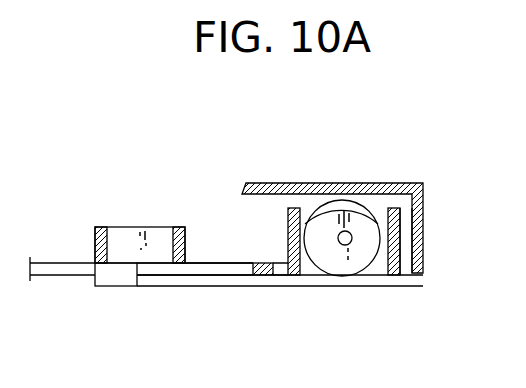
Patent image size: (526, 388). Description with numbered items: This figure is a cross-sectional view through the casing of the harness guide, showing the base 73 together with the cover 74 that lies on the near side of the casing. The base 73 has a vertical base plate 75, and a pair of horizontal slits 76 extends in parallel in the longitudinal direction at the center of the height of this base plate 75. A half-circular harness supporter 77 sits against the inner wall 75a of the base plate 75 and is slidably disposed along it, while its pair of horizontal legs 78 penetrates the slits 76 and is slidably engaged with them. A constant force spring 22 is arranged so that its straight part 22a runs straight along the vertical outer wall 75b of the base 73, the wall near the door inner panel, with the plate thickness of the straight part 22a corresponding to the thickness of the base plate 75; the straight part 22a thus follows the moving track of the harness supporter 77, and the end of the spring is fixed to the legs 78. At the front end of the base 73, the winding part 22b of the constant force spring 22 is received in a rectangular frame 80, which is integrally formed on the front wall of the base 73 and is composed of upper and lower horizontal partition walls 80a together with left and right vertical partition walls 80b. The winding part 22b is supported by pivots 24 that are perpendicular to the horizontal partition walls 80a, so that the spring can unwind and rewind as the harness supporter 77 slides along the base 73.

The constant force spring 22 is at (360, 196).
The straight part 22a is at (193, 287).
The winding part 22b is at (325, 253).
The pivot 24 is at (348, 246).
The base 73 is at (272, 277).
The cover 74 is at (403, 186).
The vertical base plate 75 is at (268, 262).
The inner wall 75a is at (62, 262).
The outer wall 75b is at (163, 277).
The slit 76 is at (197, 270).
The harness supporter 77 is at (135, 228).
The leg 78 is at (112, 272).
The rectangular frame 80 is at (406, 279).
The horizontal partition wall 80a is at (379, 278).
The vertical partition wall 80b is at (418, 226).